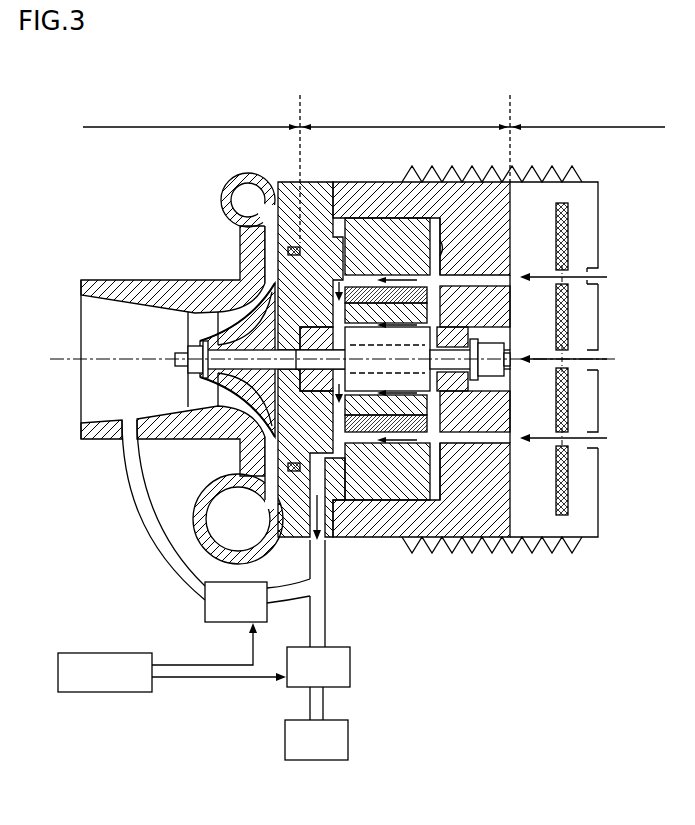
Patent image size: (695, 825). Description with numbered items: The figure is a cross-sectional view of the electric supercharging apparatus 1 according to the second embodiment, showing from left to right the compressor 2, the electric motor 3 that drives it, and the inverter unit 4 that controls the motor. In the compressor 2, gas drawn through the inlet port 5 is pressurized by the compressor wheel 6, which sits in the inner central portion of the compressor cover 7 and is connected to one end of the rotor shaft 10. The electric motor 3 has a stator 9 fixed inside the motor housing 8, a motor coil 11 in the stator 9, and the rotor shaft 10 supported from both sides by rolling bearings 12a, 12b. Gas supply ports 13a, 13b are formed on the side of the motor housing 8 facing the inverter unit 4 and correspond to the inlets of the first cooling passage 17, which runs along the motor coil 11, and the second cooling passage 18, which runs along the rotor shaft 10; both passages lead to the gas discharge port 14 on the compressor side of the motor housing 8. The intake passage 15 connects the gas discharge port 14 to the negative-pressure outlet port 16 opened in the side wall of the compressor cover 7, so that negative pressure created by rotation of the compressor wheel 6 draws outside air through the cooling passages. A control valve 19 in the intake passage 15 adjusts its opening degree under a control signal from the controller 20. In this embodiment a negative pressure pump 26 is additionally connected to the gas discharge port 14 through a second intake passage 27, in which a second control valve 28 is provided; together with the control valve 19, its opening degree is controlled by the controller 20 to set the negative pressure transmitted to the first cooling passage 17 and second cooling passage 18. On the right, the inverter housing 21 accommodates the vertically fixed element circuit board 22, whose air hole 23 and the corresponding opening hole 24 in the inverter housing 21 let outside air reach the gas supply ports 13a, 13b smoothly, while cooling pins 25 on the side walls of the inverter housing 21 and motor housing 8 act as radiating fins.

The electric supercharging apparatus 1 is at (668, 78).
The compressor 2 is at (191, 114).
The electric motor 3 is at (405, 169).
The inverter unit 4 is at (587, 138).
The inlet port 5 is at (68, 322).
The compressor wheel 6 is at (213, 378).
The compressor cover 7 is at (152, 288).
The motor housing 8 is at (346, 202).
The stator 9 is at (378, 225).
The rotor shaft 10 is at (440, 362).
The motor coil 11 is at (425, 296).
The rolling bearing 12a is at (308, 318).
The rolling bearing 12b is at (472, 336).
The gas supply port 13a is at (514, 283).
The gas supply port 13b is at (511, 372).
The gas discharge port 14 is at (324, 548).
The intake passage 15 is at (283, 593).
The negative-pressure outlet port 16 is at (130, 418).
The first cooling passage 17 is at (492, 275).
The second cooling passage 18 is at (478, 328).
The control valve 19 is at (214, 623).
The controller 20 is at (125, 652).
The inverter housing 21 is at (600, 196).
The element circuit board 22 is at (568, 233).
The air hole 23 is at (570, 272).
The opening hole 24 is at (593, 279).
The cooling pins 25 is at (552, 170).
The negative pressure pump 26 is at (340, 760).
The second intake passage 27 is at (322, 598).
The second control valve 28 is at (342, 687).